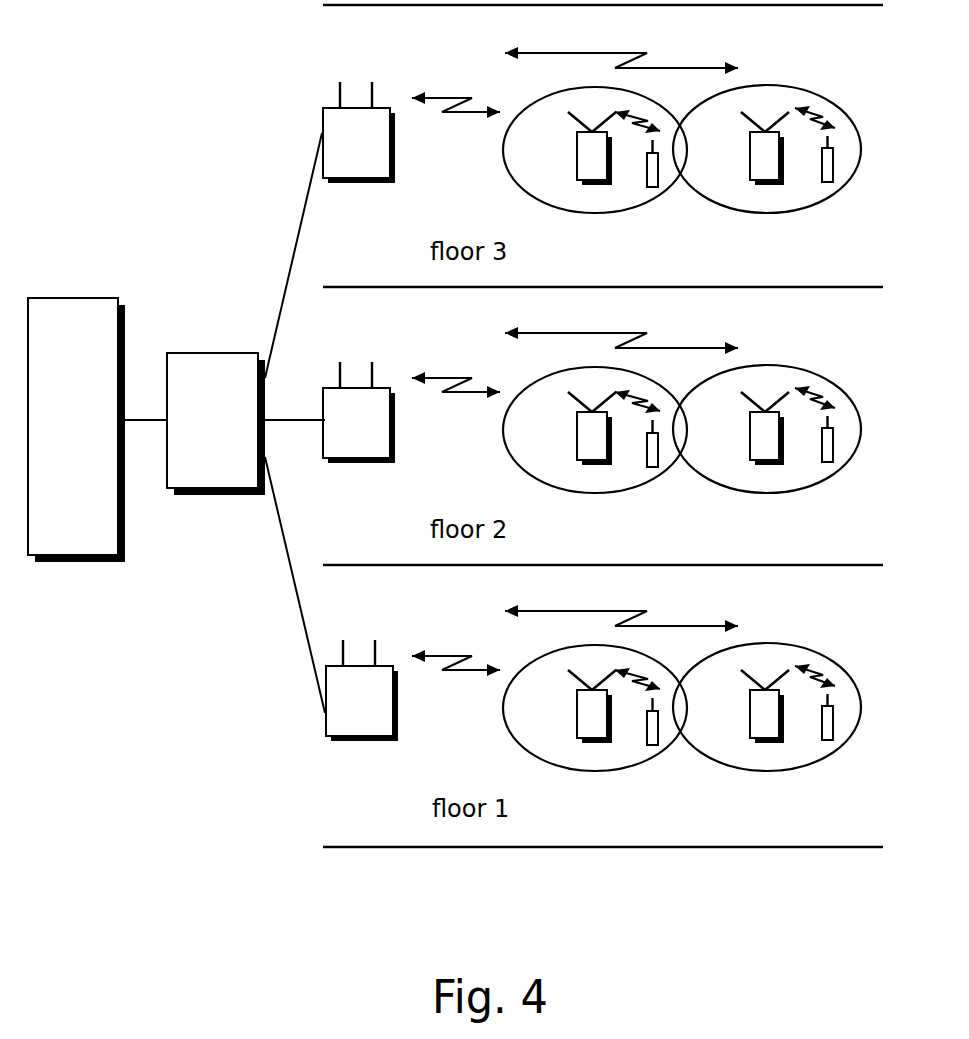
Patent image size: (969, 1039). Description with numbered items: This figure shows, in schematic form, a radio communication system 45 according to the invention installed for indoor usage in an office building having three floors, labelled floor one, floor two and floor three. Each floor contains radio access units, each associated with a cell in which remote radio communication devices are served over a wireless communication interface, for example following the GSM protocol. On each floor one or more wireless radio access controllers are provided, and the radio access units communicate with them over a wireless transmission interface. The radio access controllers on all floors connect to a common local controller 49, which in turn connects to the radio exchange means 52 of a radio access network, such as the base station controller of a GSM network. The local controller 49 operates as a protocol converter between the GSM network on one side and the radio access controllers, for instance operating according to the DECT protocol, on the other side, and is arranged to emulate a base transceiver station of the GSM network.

The radio communication system 45 is at (212, 730).
The local controller 49 is at (203, 478).
The radio exchange means 52 is at (60, 548).